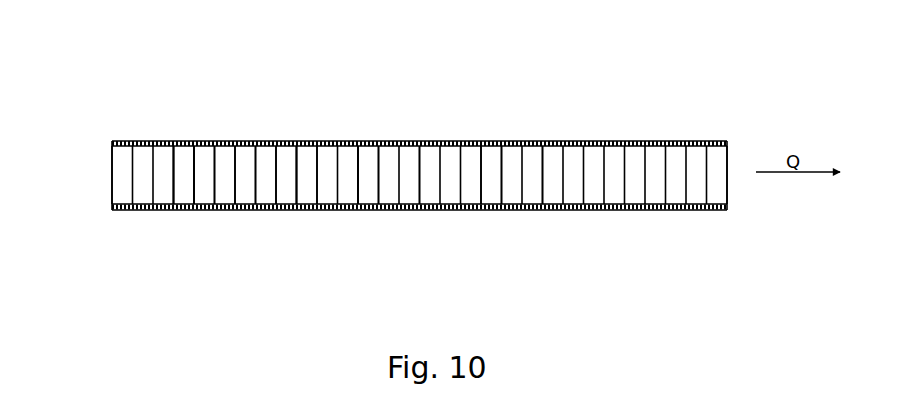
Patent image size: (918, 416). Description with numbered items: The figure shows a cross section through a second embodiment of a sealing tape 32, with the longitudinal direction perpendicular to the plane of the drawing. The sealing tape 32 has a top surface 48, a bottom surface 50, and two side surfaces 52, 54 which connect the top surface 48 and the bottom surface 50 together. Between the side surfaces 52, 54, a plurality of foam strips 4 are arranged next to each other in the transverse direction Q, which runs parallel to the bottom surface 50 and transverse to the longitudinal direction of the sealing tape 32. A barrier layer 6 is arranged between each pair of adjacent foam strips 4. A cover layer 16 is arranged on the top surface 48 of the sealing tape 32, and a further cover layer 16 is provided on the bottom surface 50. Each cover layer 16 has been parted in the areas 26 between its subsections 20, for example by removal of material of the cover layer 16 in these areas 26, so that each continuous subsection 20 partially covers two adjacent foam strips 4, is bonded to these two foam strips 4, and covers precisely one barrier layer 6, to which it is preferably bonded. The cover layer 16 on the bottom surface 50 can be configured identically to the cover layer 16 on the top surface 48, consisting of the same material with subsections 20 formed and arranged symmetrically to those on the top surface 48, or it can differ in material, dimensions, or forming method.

The sealing tape 32 is at (617, 72).
The top surface 48 is at (436, 141).
The bottom surface 50 is at (598, 211).
The side surface 52 is at (112, 167).
The side surface 54 is at (728, 188).
The cover layer 16 is at (105, 143).
The subsection of the cover layer 20 is at (172, 141).
The areas between the subsections 26 is at (305, 141).
The foam strip 4 is at (224, 198).
The barrier layer 6 is at (307, 199).